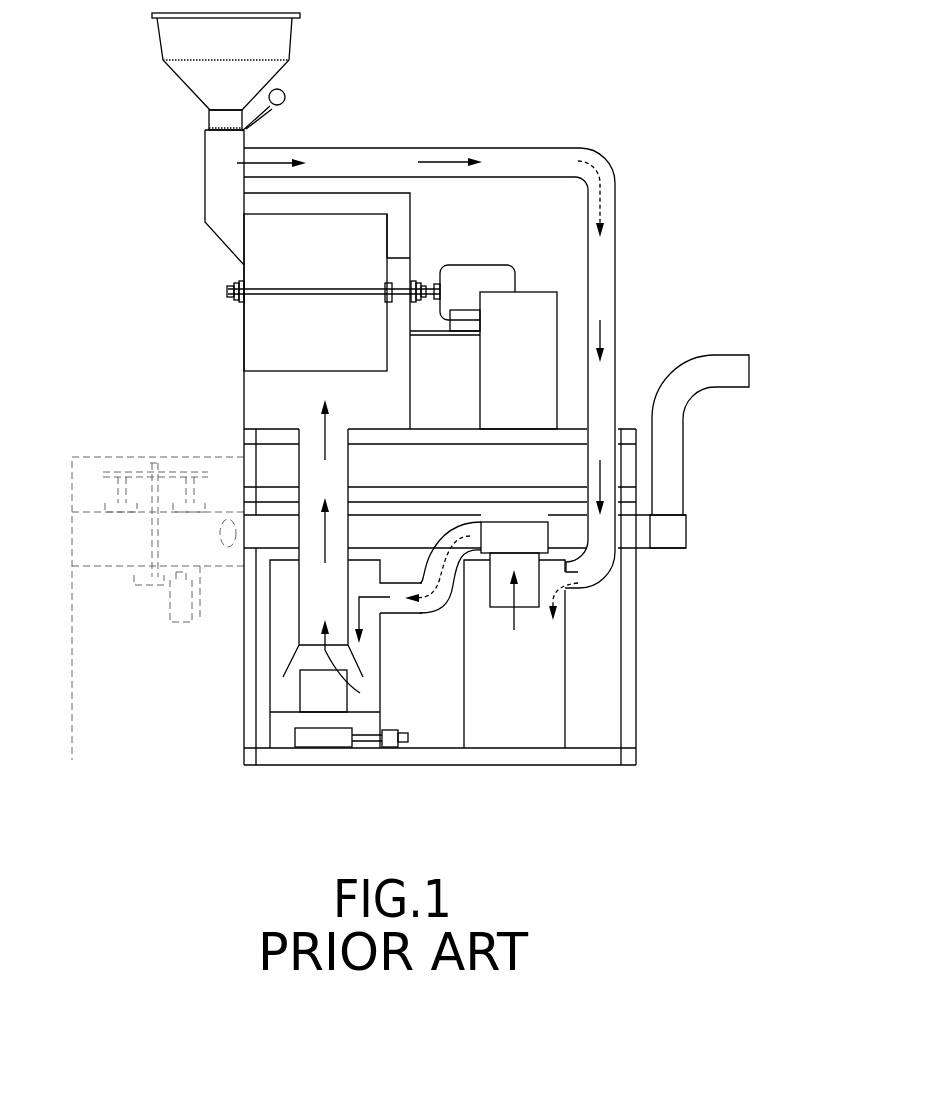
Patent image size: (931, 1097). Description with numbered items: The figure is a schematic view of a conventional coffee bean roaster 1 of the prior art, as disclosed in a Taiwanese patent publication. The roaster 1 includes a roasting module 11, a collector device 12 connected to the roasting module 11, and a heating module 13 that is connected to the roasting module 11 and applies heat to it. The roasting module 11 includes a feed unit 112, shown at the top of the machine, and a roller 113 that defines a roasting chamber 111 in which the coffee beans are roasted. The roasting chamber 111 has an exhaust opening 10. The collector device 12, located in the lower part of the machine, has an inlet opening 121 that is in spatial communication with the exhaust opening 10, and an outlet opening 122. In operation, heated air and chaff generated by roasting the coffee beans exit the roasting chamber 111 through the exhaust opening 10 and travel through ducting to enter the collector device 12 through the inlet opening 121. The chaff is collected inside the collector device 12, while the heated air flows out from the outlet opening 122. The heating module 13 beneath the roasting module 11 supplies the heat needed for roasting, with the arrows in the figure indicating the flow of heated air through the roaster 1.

The coffee bean roaster 1 is at (511, 107).
The exhaust opening 10 is at (244, 236).
The roasting module 11 is at (244, 344).
The roasting chamber 111 is at (328, 250).
The feed unit 112 is at (292, 48).
The roller 113 is at (377, 210).
The collector device 12 is at (565, 684).
The inlet opening 121 is at (563, 590).
The outlet opening 122 is at (467, 525).
The heating module 13 is at (300, 600).